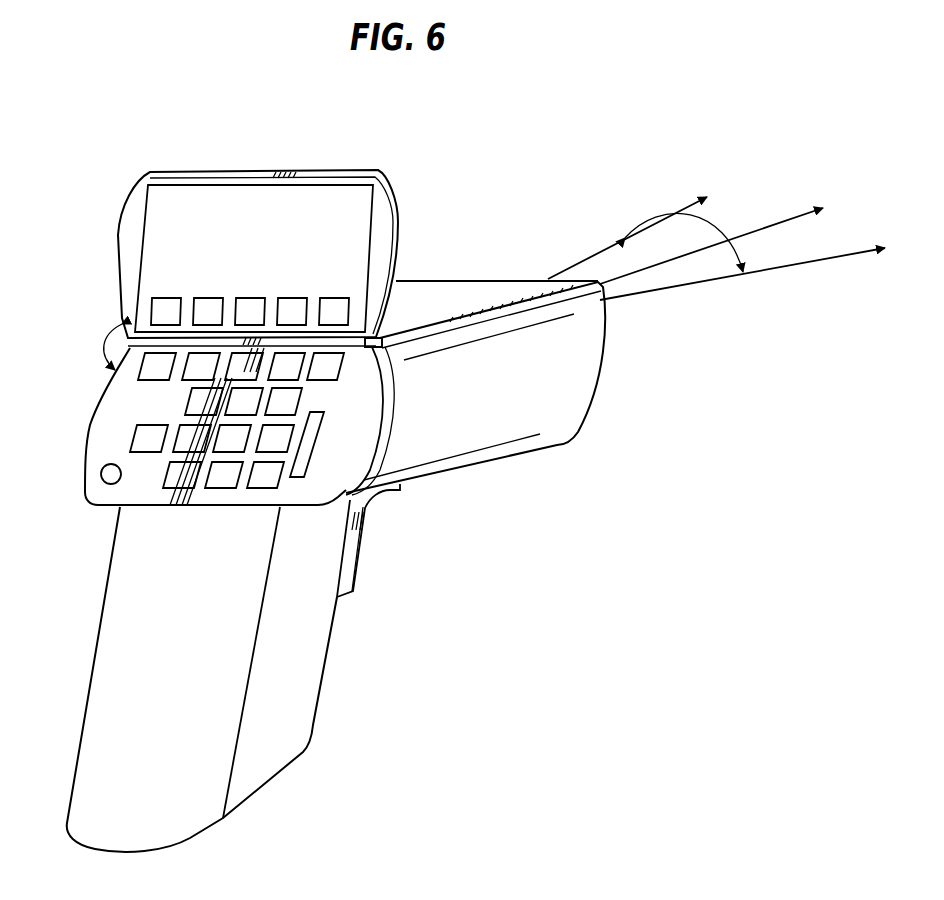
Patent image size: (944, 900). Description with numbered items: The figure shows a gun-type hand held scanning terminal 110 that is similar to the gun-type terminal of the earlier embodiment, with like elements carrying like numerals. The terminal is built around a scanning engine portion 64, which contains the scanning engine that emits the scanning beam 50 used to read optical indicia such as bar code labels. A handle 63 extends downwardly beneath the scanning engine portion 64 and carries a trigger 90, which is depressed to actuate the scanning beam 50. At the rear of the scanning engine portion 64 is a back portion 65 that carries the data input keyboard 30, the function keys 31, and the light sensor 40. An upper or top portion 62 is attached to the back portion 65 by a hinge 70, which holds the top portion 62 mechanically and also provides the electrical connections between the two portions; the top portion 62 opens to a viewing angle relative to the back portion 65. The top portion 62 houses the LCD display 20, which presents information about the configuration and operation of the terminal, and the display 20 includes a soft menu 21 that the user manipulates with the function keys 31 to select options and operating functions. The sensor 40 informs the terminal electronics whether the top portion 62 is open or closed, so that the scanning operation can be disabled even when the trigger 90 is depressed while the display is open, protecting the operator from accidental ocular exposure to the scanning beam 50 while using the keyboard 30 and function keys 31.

The hand held scanning terminal 110 is at (302, 118).
The top portion 62 is at (147, 182).
The LCD display 20 is at (358, 238).
The soft menu 21 is at (160, 312).
The back portion 65 is at (110, 417).
The function keys 31 is at (322, 368).
The light sensor 40 is at (101, 470).
The data input keyboard 30 is at (128, 490).
The hinge 70 is at (374, 343).
The scanning engine portion 64 is at (556, 395).
The scanning beam 50 is at (657, 230).
The trigger 90 is at (357, 557).
The handle 63 is at (293, 688).